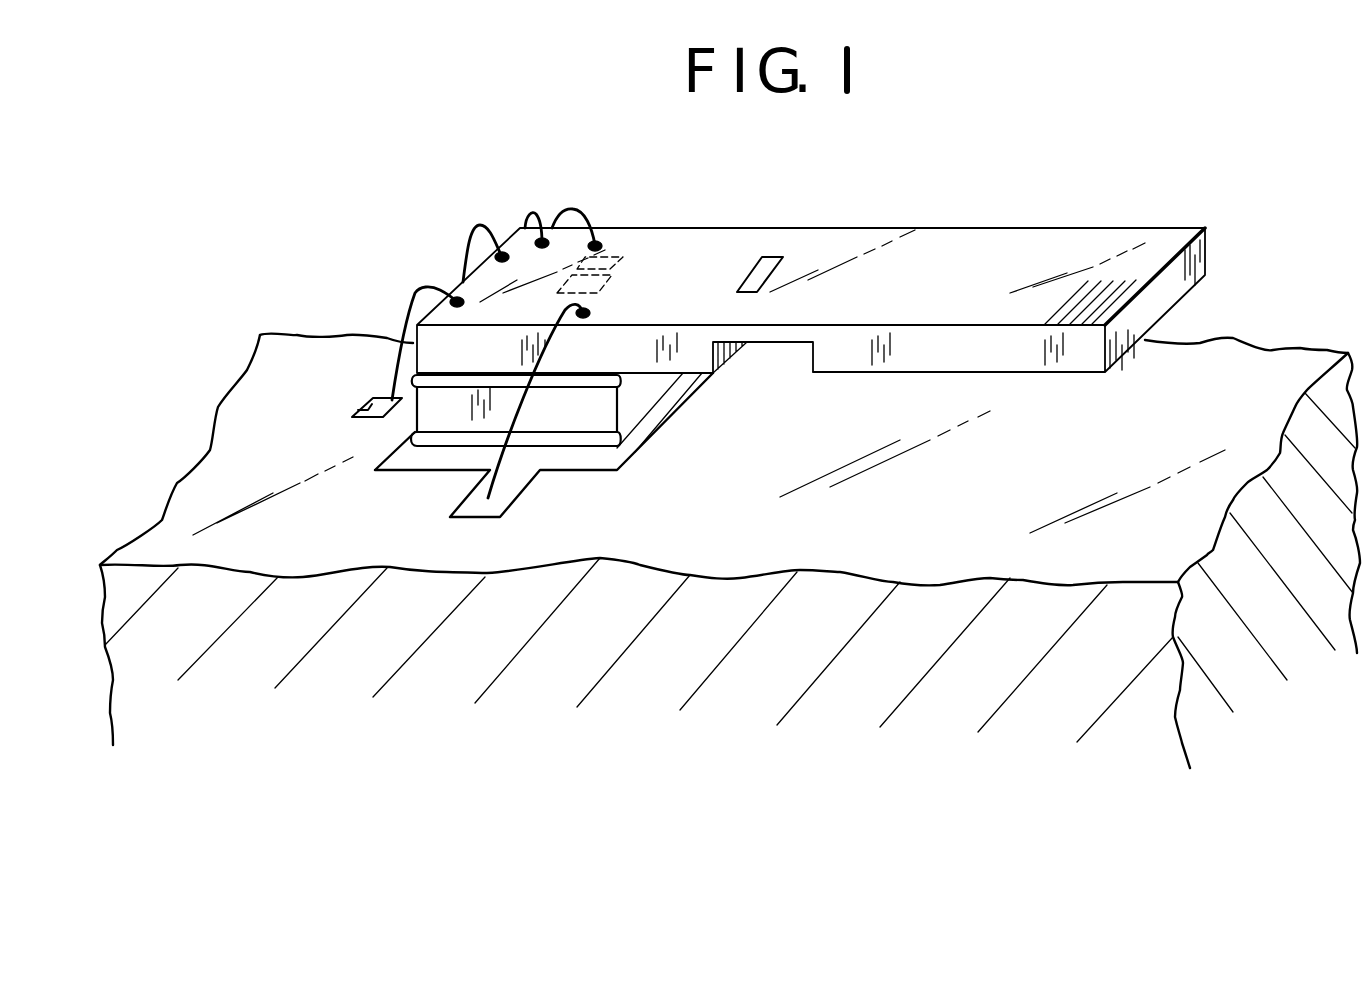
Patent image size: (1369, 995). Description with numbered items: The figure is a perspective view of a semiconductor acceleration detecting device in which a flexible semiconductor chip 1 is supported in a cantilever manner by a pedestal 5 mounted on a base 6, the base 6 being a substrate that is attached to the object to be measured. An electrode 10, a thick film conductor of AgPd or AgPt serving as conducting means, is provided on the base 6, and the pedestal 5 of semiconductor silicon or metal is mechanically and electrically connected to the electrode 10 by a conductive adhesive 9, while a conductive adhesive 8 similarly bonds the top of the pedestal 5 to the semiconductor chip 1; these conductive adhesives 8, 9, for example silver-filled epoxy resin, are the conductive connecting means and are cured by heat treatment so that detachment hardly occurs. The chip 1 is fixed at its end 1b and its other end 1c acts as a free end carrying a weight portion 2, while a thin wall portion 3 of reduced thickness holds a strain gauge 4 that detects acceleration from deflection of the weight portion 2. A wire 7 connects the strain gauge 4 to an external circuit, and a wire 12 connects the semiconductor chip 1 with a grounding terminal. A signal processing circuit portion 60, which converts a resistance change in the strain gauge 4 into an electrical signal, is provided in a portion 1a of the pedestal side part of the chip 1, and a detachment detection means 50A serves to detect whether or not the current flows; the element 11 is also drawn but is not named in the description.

The semiconductor chip 1 is at (1085, 247).
The portion of the pedestal side part of the semiconductor chip 1a is at (620, 252).
The end of the semiconductor chip 1b is at (557, 275).
The other end of the semiconductor chip 1c is at (1167, 247).
The weight portion 2 is at (1018, 353).
The thin wall portion 3 is at (850, 247).
The strain gauge 4 is at (777, 257).
The pedestal 5 is at (610, 412).
The base 6 is at (247, 407).
The wire 7 is at (476, 228).
The conductive adhesive 8 is at (622, 374).
The conductive adhesive 9 is at (617, 440).
The electrode 10 is at (550, 455).
The semiconductor element 11 is at (522, 407).
The wire 12 is at (412, 293).
The detachment detection means 50A is at (627, 280).
The signal processing circuit portion 60 is at (605, 257).